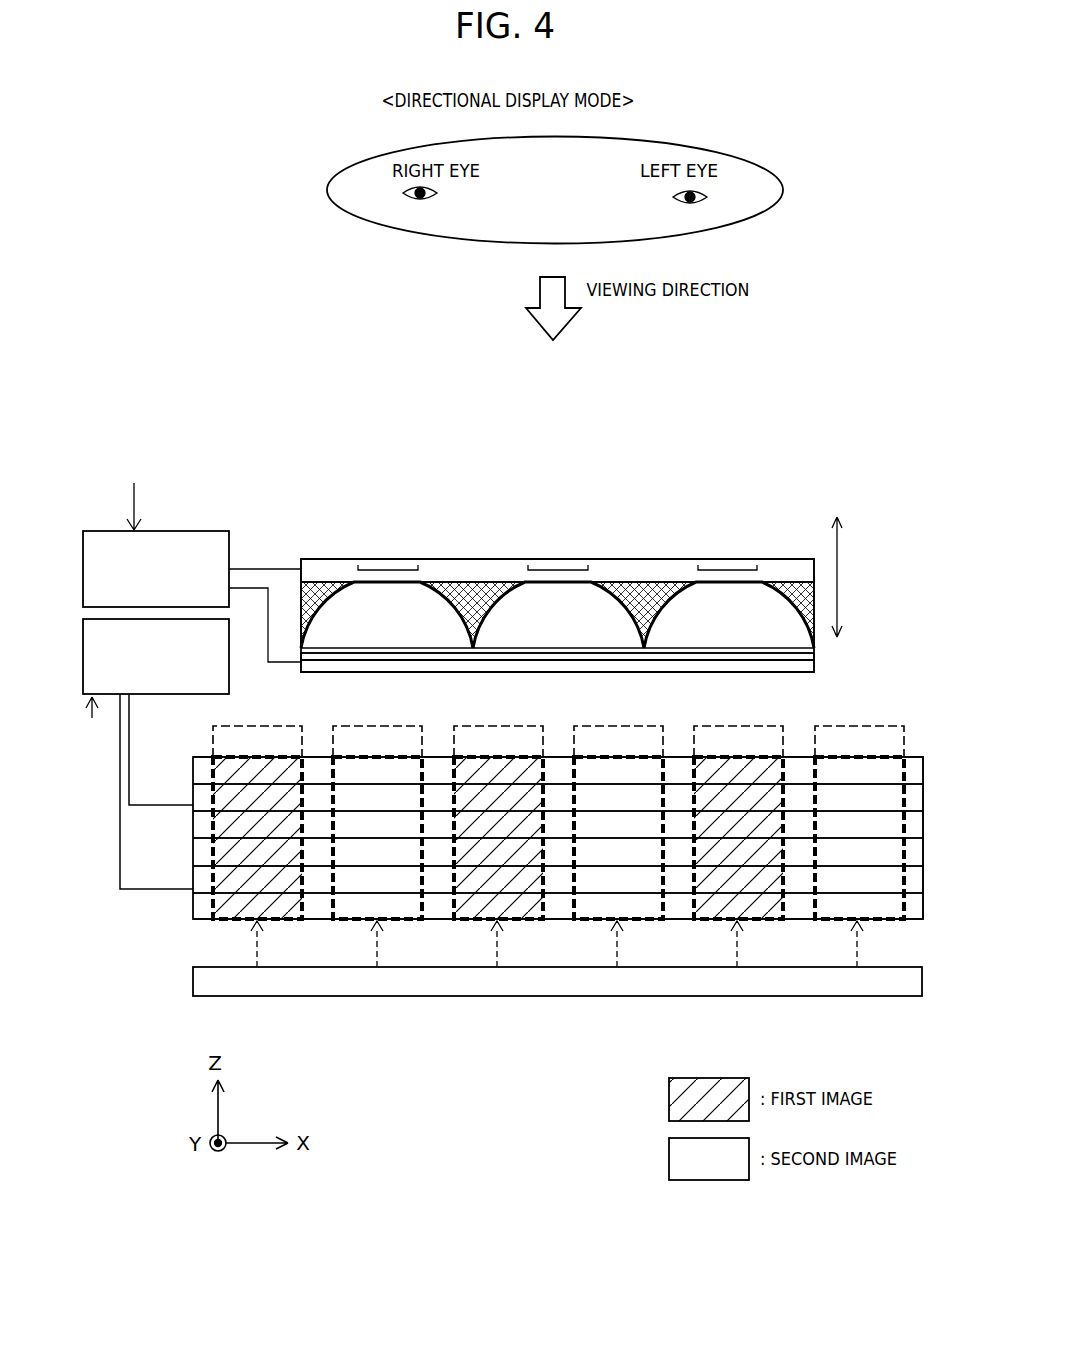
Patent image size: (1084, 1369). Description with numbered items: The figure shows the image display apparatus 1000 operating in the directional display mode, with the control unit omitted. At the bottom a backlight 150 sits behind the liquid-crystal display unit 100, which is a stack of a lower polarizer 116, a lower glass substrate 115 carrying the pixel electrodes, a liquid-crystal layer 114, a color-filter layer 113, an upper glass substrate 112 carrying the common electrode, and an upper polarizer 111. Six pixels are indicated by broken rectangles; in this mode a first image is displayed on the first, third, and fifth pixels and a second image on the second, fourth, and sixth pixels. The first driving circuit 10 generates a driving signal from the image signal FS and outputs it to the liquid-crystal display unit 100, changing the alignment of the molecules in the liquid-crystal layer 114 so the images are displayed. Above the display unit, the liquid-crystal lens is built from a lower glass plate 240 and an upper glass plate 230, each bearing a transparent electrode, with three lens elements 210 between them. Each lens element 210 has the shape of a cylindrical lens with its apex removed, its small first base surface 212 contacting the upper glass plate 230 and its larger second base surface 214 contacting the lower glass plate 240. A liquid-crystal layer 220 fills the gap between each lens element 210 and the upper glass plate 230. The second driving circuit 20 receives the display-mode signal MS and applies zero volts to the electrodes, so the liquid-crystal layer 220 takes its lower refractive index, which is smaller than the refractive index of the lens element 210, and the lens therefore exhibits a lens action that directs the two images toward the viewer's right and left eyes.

The image display apparatus 1000 is at (738, 420).
The first driving circuit 10 is at (219, 697).
The second driving circuit 20 is at (218, 530).
The liquid-crystal display unit 100 is at (118, 737).
The upper polarizer 111 is at (192, 768).
The upper glass substrate 112 is at (192, 797).
The color-filter layer 113 is at (192, 826).
The liquid-crystal layer 114 is at (192, 851).
The lower glass substrate 115 is at (192, 874).
The lower polarizer 116 is at (192, 908).
The backlight 150 is at (192, 985).
The lens element 210 is at (405, 627).
The first base surface 212 is at (388, 560).
The second base surface 214 is at (385, 661).
The liquid-crystal layer 220 is at (327, 592).
The upper glass plate 230 is at (304, 562).
The lower glass plate 240 is at (311, 675).